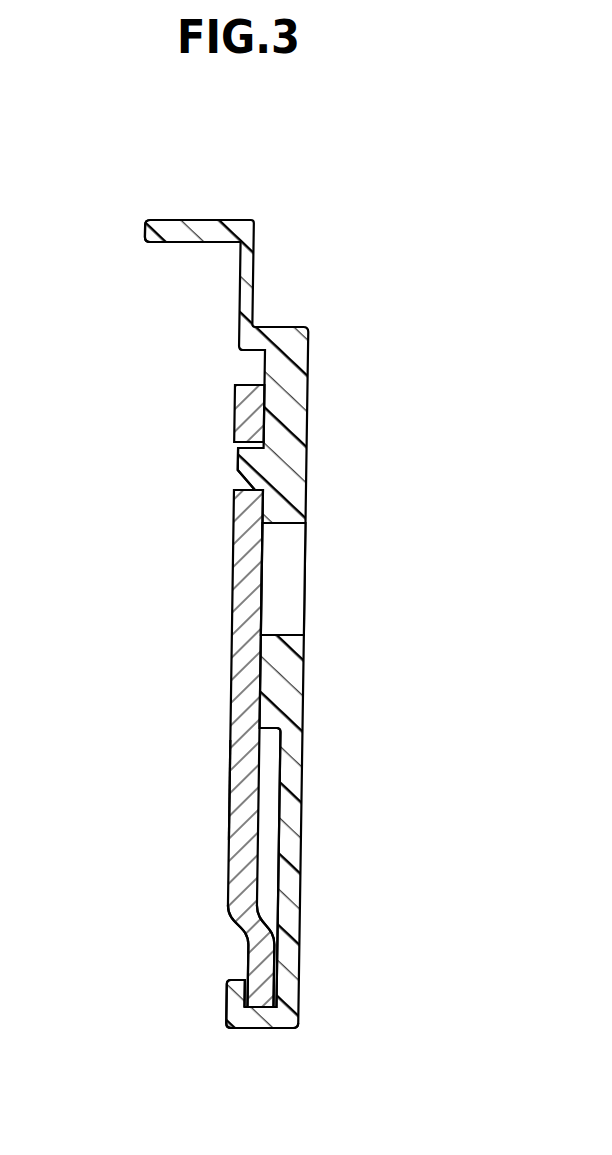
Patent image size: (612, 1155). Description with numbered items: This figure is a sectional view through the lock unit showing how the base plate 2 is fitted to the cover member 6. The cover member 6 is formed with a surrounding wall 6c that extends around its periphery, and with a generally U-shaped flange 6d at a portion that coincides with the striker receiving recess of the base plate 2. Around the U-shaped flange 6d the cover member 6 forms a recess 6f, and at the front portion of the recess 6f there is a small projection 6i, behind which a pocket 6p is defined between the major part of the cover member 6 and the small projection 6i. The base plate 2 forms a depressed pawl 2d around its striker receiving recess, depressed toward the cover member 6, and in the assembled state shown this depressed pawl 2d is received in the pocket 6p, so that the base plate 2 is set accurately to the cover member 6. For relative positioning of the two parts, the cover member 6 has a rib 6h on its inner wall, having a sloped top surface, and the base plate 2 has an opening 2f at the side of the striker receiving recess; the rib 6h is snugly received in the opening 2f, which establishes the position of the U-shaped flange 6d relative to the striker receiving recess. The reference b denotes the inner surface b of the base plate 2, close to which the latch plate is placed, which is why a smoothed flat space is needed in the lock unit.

The base plate 2 is at (204, 696).
The depressed pawl 2d is at (255, 965).
The opening 2f is at (235, 481).
The cover member 6 is at (254, 627).
The surrounding wall 6c is at (177, 219).
The U-shaped flange 6d is at (255, 1027).
The recess 6f is at (279, 865).
The rib 6h is at (240, 466).
The small projection 6i is at (227, 989).
The pocket 6p is at (283, 988).
The inner surface of the base plate b is at (218, 788).